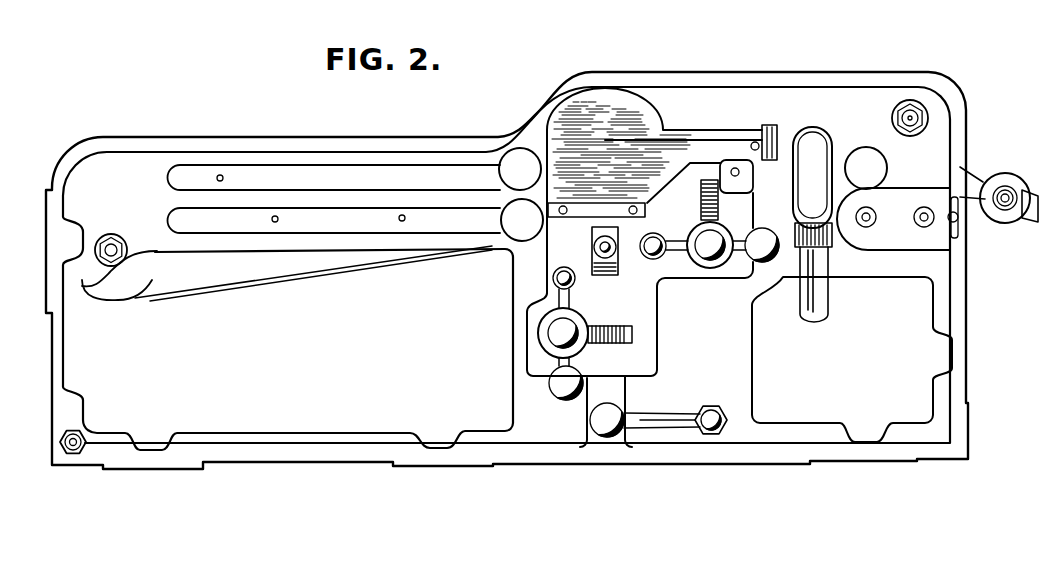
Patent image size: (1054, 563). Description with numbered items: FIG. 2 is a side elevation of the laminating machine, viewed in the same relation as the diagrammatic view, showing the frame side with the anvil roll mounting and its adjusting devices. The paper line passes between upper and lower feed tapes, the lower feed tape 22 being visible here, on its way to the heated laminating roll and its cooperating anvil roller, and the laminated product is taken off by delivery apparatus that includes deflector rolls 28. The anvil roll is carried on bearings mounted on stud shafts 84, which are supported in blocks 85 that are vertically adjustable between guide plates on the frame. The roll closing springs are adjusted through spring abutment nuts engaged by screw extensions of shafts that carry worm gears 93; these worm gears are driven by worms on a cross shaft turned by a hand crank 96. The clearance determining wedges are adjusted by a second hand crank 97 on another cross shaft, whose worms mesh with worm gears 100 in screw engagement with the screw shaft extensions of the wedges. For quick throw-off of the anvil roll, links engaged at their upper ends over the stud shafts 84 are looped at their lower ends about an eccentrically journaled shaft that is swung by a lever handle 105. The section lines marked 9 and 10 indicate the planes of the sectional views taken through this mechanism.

The section line 9- 9 is at (568, 422).
The section line 10- 10 is at (716, 305).
The lower feed tape 22 is at (283, 282).
The deflector rolls 28 is at (997, 185).
The stud shafts 84 is at (618, 247).
The blocks 85 is at (618, 261).
The worm gears 93 is at (610, 325).
The hand crank 96 is at (556, 386).
The hand crank 97 is at (764, 240).
The worm gears 100 is at (703, 197).
The lever handle 105 is at (650, 417).